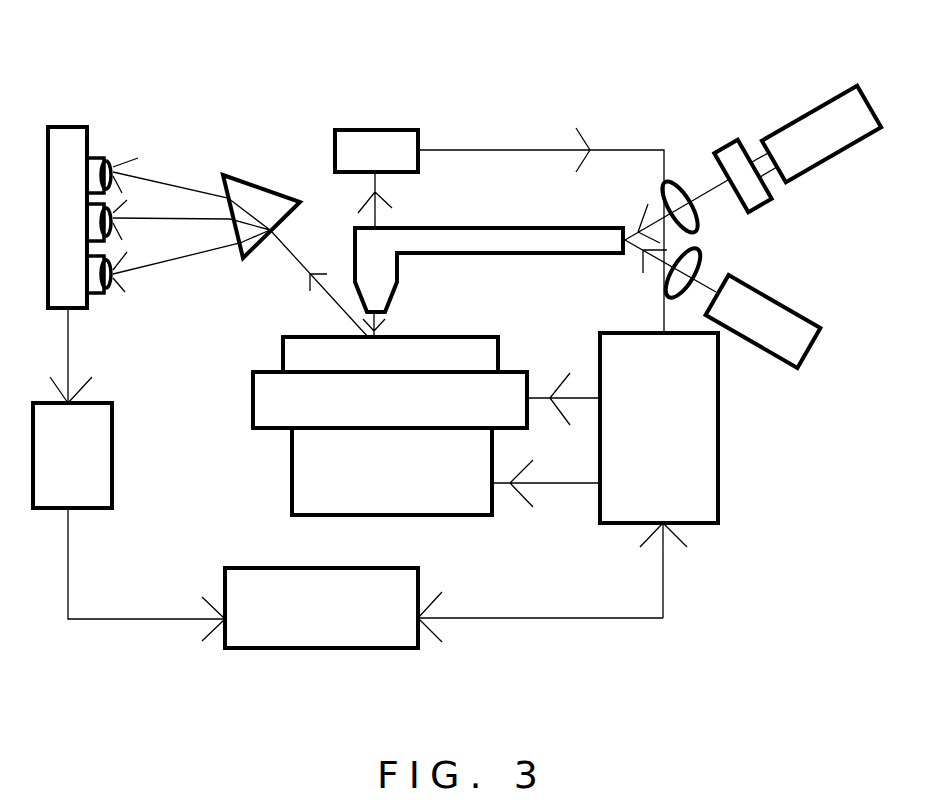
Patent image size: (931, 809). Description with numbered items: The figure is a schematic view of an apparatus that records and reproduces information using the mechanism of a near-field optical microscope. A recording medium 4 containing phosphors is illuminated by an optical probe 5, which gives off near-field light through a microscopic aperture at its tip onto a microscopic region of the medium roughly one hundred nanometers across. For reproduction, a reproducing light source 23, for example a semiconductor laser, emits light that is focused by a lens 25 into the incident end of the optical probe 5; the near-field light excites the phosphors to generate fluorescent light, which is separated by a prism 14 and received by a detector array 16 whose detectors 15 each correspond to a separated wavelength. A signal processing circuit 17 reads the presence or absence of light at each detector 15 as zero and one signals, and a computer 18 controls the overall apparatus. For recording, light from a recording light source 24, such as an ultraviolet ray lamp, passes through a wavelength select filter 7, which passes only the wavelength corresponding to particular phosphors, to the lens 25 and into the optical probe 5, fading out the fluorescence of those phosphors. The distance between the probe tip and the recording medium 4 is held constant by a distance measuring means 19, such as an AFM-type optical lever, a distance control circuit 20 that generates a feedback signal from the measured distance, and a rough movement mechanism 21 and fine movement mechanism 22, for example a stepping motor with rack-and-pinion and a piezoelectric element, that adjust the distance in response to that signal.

The recording medium 4 is at (422, 350).
The optical probe 5 is at (433, 240).
The wavelength select filter 7 is at (737, 167).
The prism 14 is at (265, 203).
The detectors 15 is at (107, 293).
The detector array 16 is at (70, 153).
The signal processing circuit 17 is at (90, 477).
The computer 18 is at (370, 632).
The distance measuring means 19 is at (383, 142).
The distance control circuit 20 is at (692, 440).
The rough movement mechanism 21 is at (310, 495).
The fine movement mechanism 22 is at (263, 385).
The reproducing light source 23 is at (793, 340).
The recording light source 24 is at (813, 132).
The lens 25 is at (690, 260).